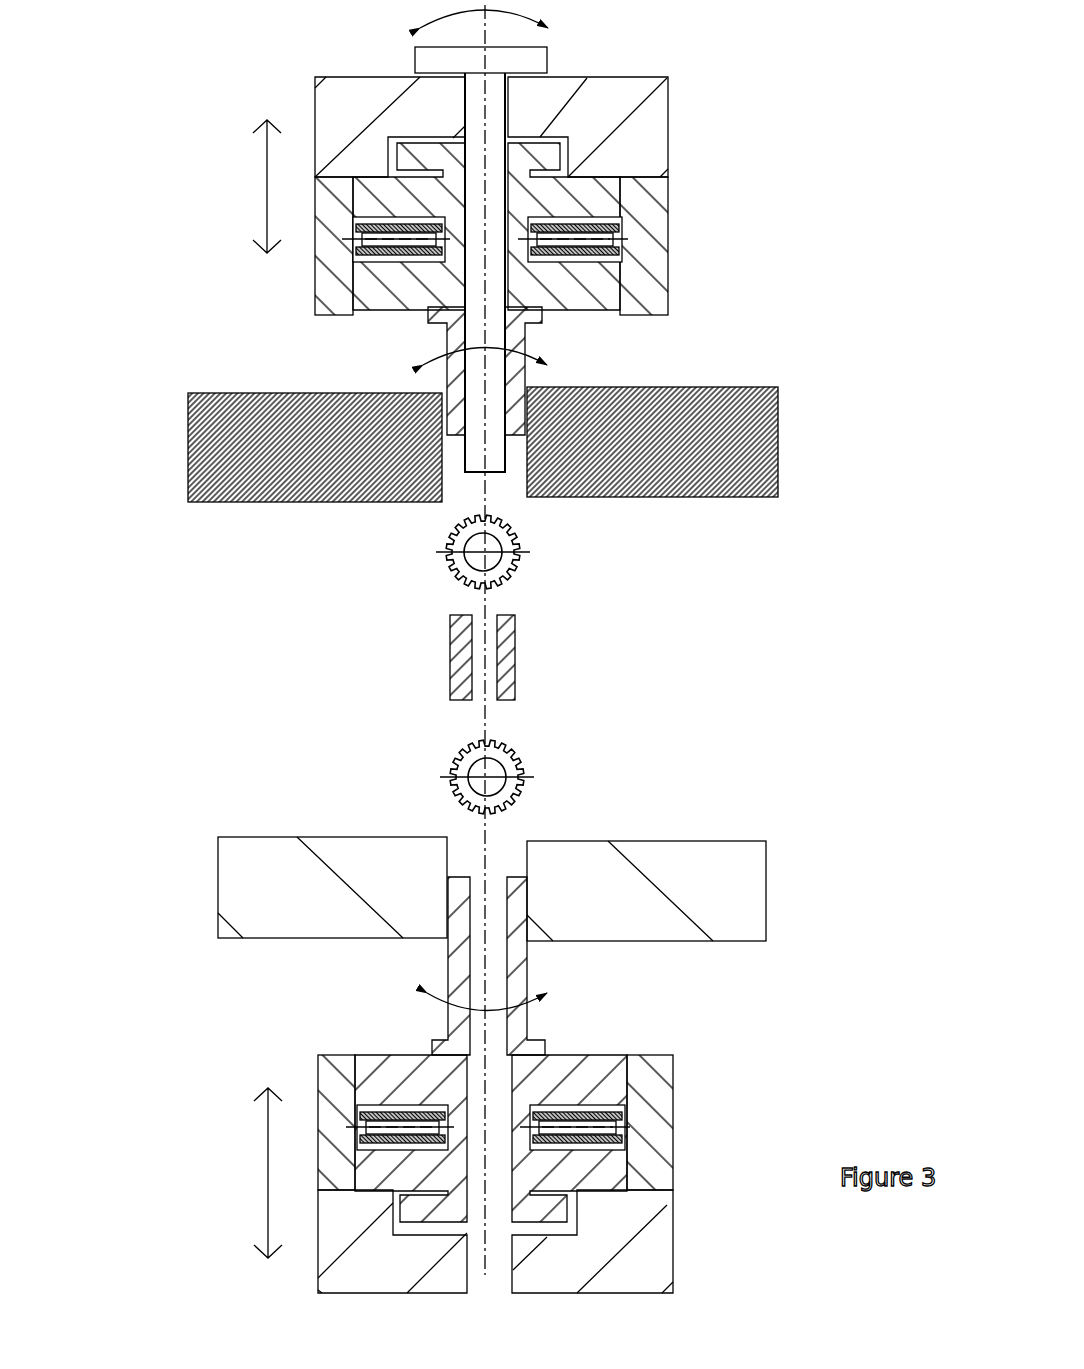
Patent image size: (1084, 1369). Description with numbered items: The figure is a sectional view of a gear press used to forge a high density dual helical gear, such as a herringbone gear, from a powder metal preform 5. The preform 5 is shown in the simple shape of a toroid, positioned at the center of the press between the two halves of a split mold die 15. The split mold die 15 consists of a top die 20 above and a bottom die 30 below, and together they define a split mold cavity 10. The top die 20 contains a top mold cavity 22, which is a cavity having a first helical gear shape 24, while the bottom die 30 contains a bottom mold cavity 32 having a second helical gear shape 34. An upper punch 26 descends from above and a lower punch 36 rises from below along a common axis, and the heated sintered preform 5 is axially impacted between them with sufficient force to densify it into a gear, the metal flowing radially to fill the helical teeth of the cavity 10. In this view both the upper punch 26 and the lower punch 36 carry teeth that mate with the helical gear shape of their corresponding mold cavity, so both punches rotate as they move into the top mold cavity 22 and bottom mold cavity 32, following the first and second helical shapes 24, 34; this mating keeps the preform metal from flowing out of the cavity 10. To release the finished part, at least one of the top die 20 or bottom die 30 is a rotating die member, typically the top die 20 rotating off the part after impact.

The preform 5 is at (520, 657).
The split mold cavity 10 is at (440, 836).
The split mold die 15 is at (288, 502).
The top die 20 is at (778, 428).
The top mold cavity 22 is at (455, 478).
The first helical gear shape 24 is at (527, 480).
The upper punch 26 is at (532, 335).
The bottom die 30 is at (772, 887).
The bottom mold cavity 32 is at (447, 852).
The second helical gear shape 34 is at (525, 852).
The lower punch 36 is at (531, 970).